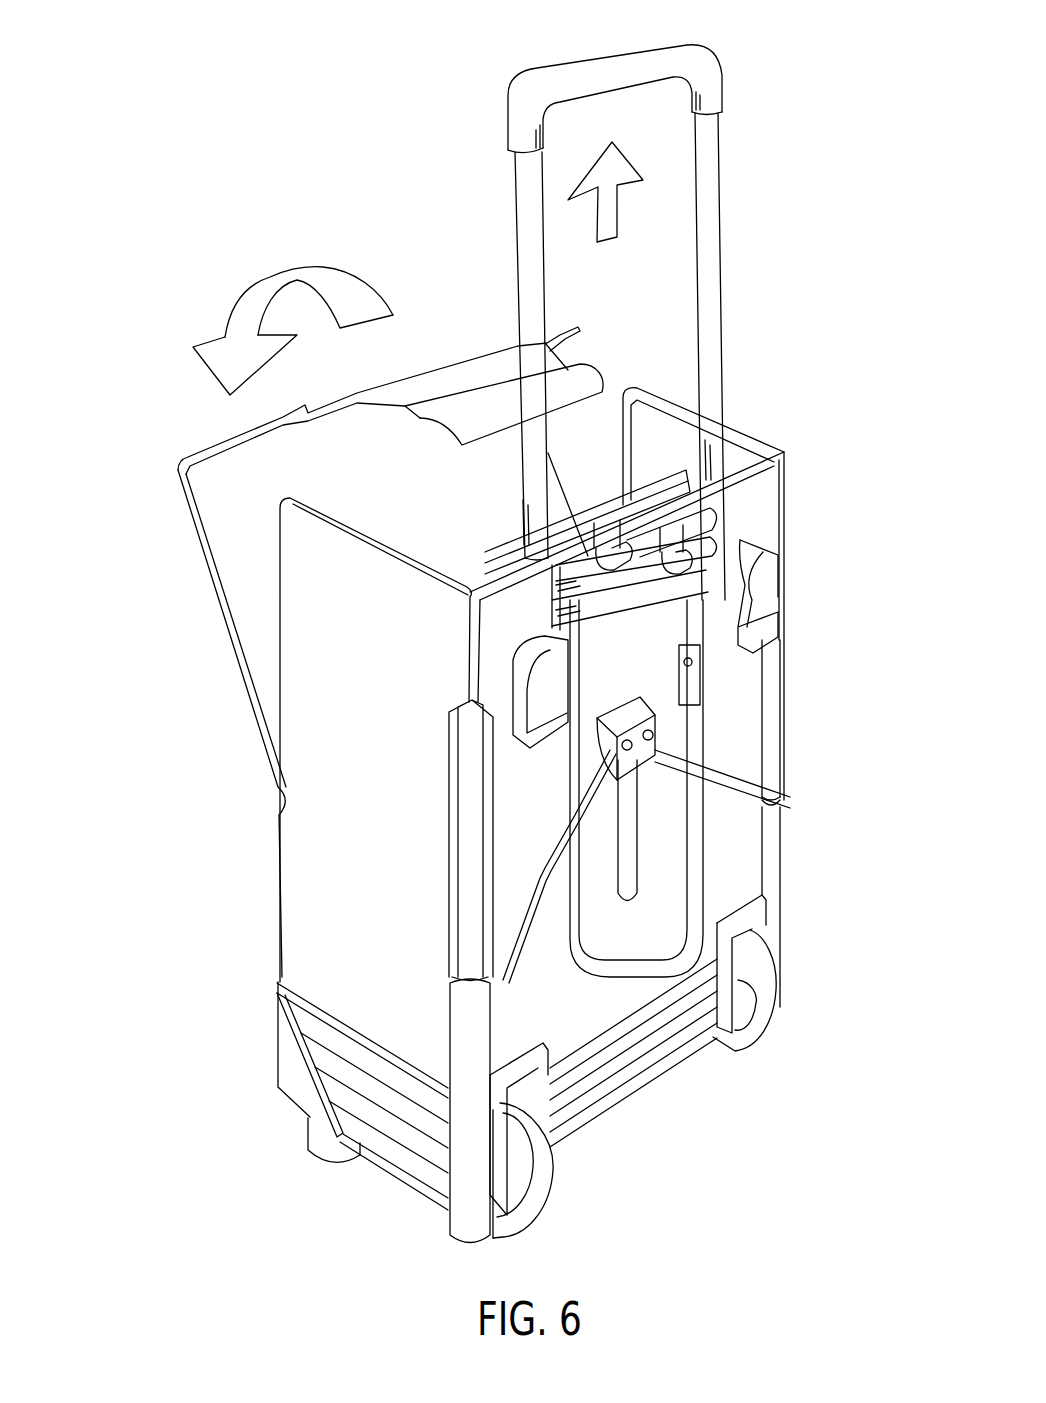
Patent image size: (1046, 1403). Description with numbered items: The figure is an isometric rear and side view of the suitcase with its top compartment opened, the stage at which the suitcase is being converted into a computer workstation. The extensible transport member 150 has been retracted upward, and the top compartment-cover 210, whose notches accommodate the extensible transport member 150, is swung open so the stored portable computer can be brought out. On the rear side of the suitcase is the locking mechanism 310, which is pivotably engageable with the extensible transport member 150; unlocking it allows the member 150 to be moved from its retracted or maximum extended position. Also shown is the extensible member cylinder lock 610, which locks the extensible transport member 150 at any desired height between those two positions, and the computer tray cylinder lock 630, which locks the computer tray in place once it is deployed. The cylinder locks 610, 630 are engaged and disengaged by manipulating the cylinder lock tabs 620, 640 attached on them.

The extensible transport member 150 is at (720, 170).
The top compartment-cover 210 is at (203, 553).
The locking mechanism 310 is at (782, 804).
The extensible member cylinder lock 610 is at (620, 582).
The cylinder lock tab 620 is at (675, 535).
The computer tray cylinder lock 630 is at (585, 567).
The cylinder lock tab 640 is at (623, 517).